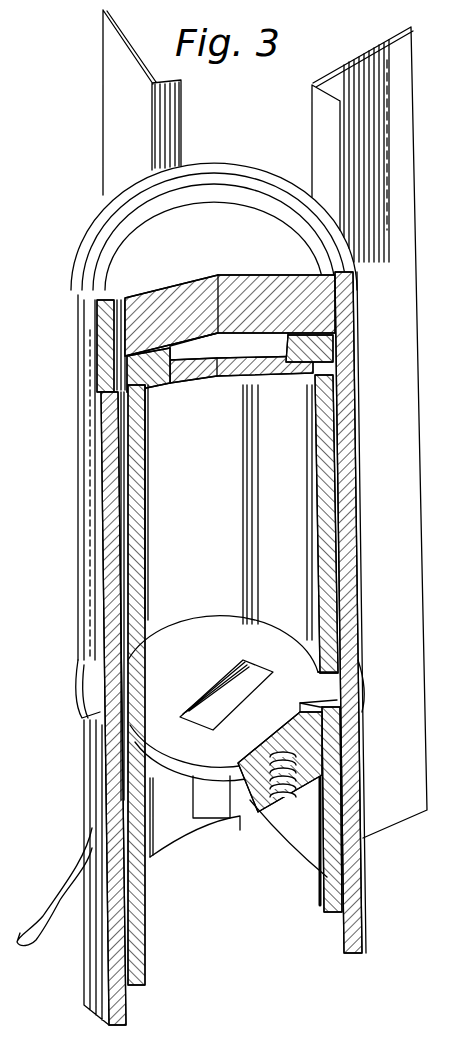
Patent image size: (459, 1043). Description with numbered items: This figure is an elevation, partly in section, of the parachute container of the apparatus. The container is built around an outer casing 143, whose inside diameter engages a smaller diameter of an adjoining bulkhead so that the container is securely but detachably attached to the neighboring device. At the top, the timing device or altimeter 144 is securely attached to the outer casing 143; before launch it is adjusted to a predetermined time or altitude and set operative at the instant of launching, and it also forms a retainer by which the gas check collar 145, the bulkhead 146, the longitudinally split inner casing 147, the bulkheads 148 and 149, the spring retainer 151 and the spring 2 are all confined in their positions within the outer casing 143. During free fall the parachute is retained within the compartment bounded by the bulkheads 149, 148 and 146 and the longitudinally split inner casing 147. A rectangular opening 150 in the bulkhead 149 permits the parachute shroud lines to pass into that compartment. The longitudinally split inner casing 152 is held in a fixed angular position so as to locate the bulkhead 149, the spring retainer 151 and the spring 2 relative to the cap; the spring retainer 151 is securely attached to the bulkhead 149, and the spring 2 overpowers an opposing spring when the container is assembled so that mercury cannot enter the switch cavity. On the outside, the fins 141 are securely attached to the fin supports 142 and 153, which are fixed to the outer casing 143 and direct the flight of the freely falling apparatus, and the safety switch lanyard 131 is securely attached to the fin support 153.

The fins 141 is at (113, 94).
The fin support 142 is at (93, 308).
The outer casing 143 is at (97, 437).
The timing device or altimeter 144 is at (260, 286).
The gas check collar 145 is at (302, 358).
The bulkhead 146 is at (318, 378).
The longitudinally split inner casing 147 is at (217, 543).
The bulkhead 148 is at (218, 654).
The bulkhead 149 is at (297, 678).
The slot 150 is at (217, 706).
The spring retainer 151 is at (267, 793).
The longitudinally split inner casing 152 is at (185, 812).
The fin support 153 is at (80, 718).
The safety switch lanyard 131 is at (93, 828).
The spring 2 is at (290, 772).